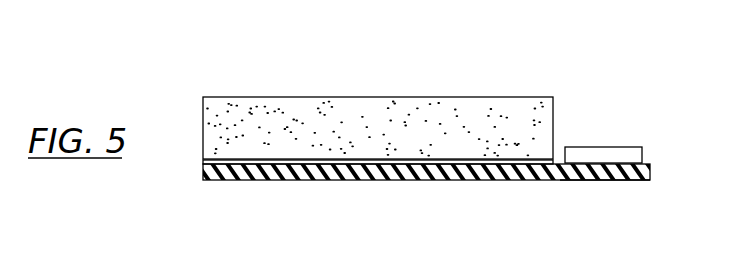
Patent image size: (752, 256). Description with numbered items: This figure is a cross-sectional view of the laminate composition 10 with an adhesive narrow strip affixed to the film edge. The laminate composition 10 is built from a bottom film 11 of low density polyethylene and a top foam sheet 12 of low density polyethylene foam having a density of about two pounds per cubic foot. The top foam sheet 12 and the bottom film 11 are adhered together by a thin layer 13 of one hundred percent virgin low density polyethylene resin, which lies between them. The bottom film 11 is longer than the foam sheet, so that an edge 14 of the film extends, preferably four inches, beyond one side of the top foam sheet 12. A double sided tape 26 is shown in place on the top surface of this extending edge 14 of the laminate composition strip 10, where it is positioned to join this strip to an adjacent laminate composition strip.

The laminate composition 10 is at (567, 44).
The bottom film 11 is at (428, 204).
The top foam sheet 12 is at (378, 101).
The layer 13 is at (378, 198).
The edge 14 is at (605, 211).
The double sided tape 26 is at (605, 125).